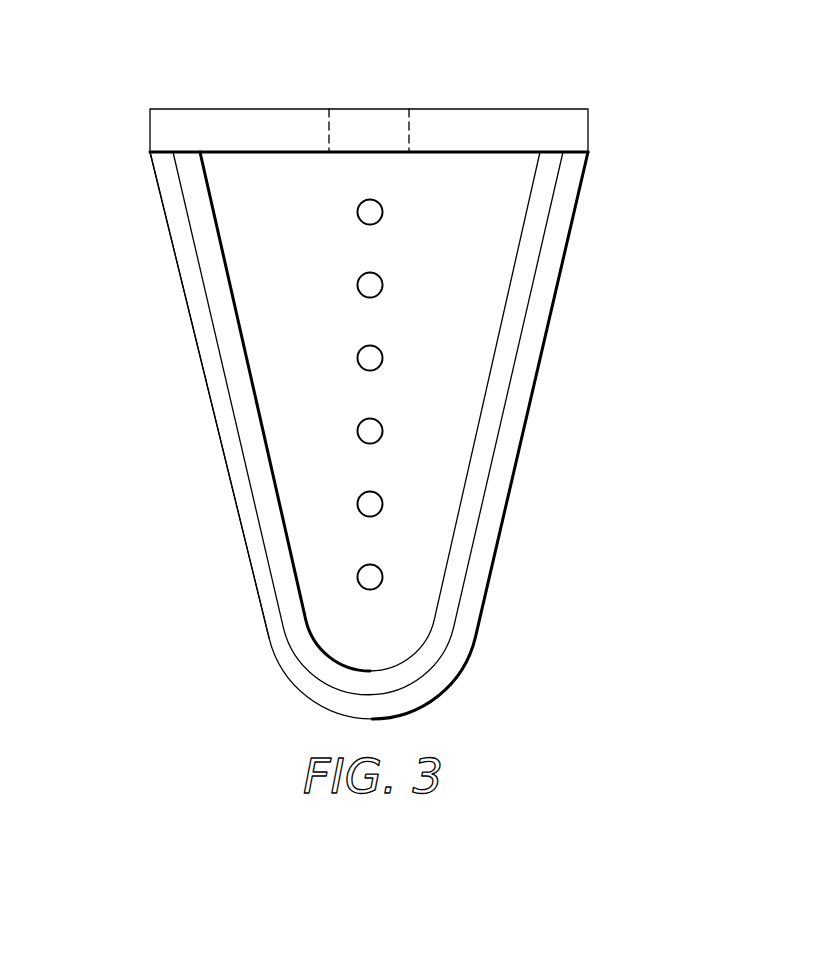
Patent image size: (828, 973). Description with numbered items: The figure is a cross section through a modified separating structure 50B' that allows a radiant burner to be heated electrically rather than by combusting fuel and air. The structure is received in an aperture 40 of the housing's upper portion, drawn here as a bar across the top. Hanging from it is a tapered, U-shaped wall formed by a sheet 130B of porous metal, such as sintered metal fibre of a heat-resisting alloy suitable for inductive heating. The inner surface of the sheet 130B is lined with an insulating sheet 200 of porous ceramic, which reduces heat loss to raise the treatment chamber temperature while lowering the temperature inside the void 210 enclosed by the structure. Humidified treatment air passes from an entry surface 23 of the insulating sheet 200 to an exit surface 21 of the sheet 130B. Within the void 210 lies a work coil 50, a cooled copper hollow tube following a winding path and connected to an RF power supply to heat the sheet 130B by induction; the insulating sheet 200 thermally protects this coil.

The modified separating structure 50B' is at (408, 364).
The aperture 40 is at (173, 108).
The sheet 130B is at (167, 208).
The insulating sheet 200 is at (216, 248).
The work coil 50 is at (383, 212).
The entry surface 23 is at (482, 404).
The exit surface 21 is at (526, 422).
The void 210 is at (435, 510).